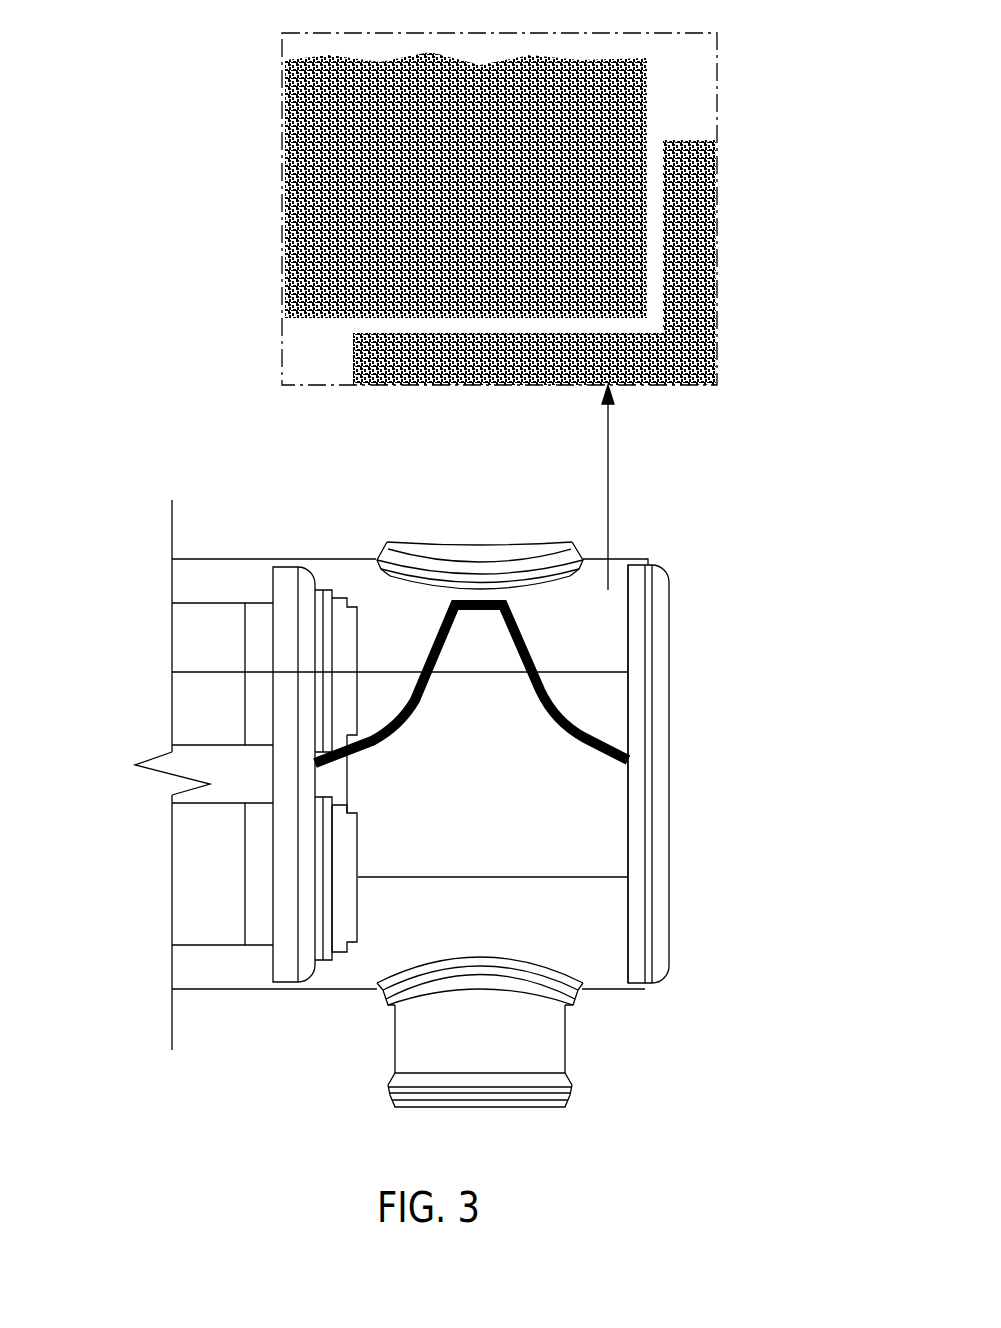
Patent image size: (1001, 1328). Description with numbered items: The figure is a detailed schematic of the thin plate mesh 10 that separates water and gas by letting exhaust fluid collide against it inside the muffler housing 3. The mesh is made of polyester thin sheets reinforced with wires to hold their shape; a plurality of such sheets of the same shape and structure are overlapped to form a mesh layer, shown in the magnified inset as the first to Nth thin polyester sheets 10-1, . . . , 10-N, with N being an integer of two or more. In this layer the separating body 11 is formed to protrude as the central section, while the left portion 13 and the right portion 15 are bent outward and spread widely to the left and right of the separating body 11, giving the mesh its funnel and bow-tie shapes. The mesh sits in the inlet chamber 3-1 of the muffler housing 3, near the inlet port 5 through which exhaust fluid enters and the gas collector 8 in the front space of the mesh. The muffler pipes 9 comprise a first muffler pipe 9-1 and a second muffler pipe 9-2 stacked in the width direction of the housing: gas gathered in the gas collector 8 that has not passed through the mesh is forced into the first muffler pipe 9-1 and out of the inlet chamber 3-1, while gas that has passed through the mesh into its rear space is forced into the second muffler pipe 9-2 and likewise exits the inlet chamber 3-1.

The muffler housing 3 is at (668, 968).
The inlet chamber 3-1 is at (611, 953).
The inlet port 5 is at (423, 1047).
The gas collector 8 is at (443, 552).
The muffler pipes 9 is at (322, 775).
The first muffler pipe 9-1 is at (323, 867).
The second muffler pipe 9-2 is at (323, 697).
The thin plate mesh 10 is at (577, 684).
The first thin polyester sheet 10-1 is at (622, 132).
The Nth thin polyester sheet 10-N is at (693, 228).
The separating body 11 is at (527, 637).
The left portion 13 is at (597, 737).
The right portion 15 is at (373, 730).